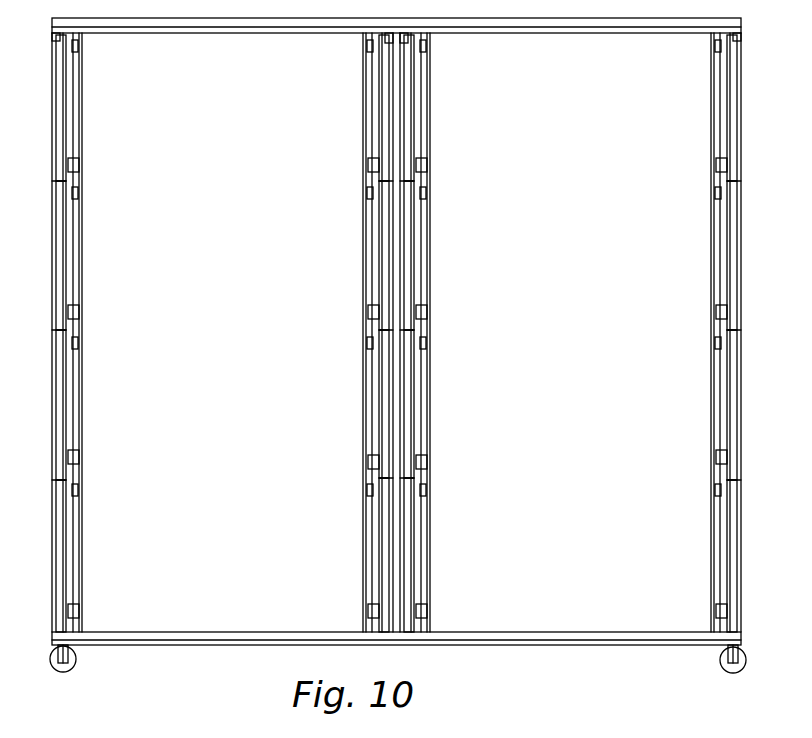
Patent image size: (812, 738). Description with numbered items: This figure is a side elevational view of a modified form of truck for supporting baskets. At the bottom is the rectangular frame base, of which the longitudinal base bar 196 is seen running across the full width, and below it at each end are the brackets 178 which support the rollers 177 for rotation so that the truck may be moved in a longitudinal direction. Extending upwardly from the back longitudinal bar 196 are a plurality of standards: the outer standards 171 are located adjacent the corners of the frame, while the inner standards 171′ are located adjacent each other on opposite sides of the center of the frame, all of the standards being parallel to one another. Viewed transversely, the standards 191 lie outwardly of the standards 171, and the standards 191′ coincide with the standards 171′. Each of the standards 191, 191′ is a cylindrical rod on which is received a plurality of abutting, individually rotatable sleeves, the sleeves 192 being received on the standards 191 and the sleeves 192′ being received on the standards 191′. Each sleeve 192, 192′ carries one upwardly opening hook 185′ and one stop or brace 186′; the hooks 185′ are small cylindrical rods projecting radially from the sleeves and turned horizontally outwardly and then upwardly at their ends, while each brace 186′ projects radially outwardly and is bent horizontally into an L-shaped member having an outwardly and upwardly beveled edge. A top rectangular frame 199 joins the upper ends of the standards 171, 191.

The outer standard 171 is at (82, 392).
The inner standard 171′ is at (363, 395).
The roller 177 is at (64, 668).
The bracket 178 is at (58, 652).
The hook 185′ is at (78, 44).
The brace 186′ is at (79, 165).
The standard 191 is at (56, 36).
The standard 191′ is at (385, 36).
The sleeve 192 is at (58, 262).
The sleeve 192′ is at (384, 105).
The longitudinal base bar 196 is at (545, 632).
The top rectangular frame 199 is at (588, 33).